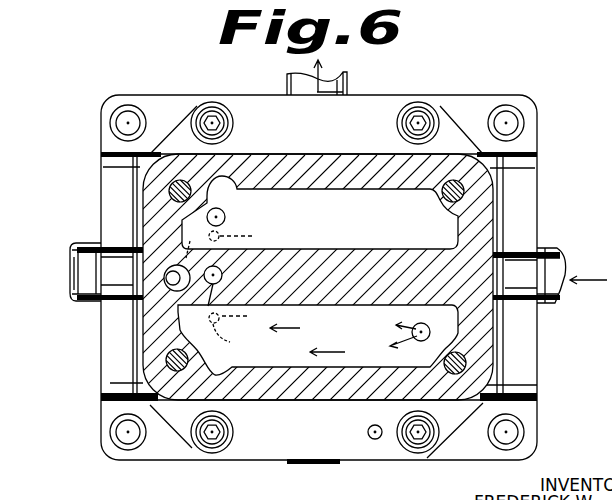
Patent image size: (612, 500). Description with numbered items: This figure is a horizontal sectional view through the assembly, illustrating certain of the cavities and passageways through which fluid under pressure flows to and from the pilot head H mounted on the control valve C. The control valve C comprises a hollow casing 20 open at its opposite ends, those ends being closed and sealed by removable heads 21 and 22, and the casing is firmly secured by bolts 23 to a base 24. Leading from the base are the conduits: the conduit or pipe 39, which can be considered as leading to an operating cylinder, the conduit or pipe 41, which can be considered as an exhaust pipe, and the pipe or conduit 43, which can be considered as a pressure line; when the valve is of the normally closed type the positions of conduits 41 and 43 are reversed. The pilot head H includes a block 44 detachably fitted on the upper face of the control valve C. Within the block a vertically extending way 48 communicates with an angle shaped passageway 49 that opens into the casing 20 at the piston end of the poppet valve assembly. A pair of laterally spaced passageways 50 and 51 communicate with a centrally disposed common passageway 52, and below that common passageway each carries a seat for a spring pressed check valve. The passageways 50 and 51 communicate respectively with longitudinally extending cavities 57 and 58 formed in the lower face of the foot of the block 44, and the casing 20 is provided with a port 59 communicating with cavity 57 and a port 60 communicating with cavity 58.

The hollow casing 20 is at (150, 406).
The removable head 21 is at (100, 363).
The removable head 22 is at (528, 347).
The bolts 23 is at (217, 118).
The base 24 is at (100, 420).
The conduit or pipe 39 is at (347, 85).
The conduit or pipe 41 is at (80, 308).
The pipe or conduit 43 is at (552, 306).
The block 44 is at (147, 335).
The vertically extending way 48 is at (201, 241).
The angle shaped passageway 49 is at (158, 303).
The passageway 50 is at (250, 236).
The passageway 51 is at (283, 330).
The common passageway 52 is at (206, 304).
The cavity 57 is at (336, 192).
The cavity 58 is at (278, 364).
The port 59 is at (226, 217).
The port 60 is at (398, 335).
The pilot head H is at (138, 195).
The control valve C is at (93, 225).